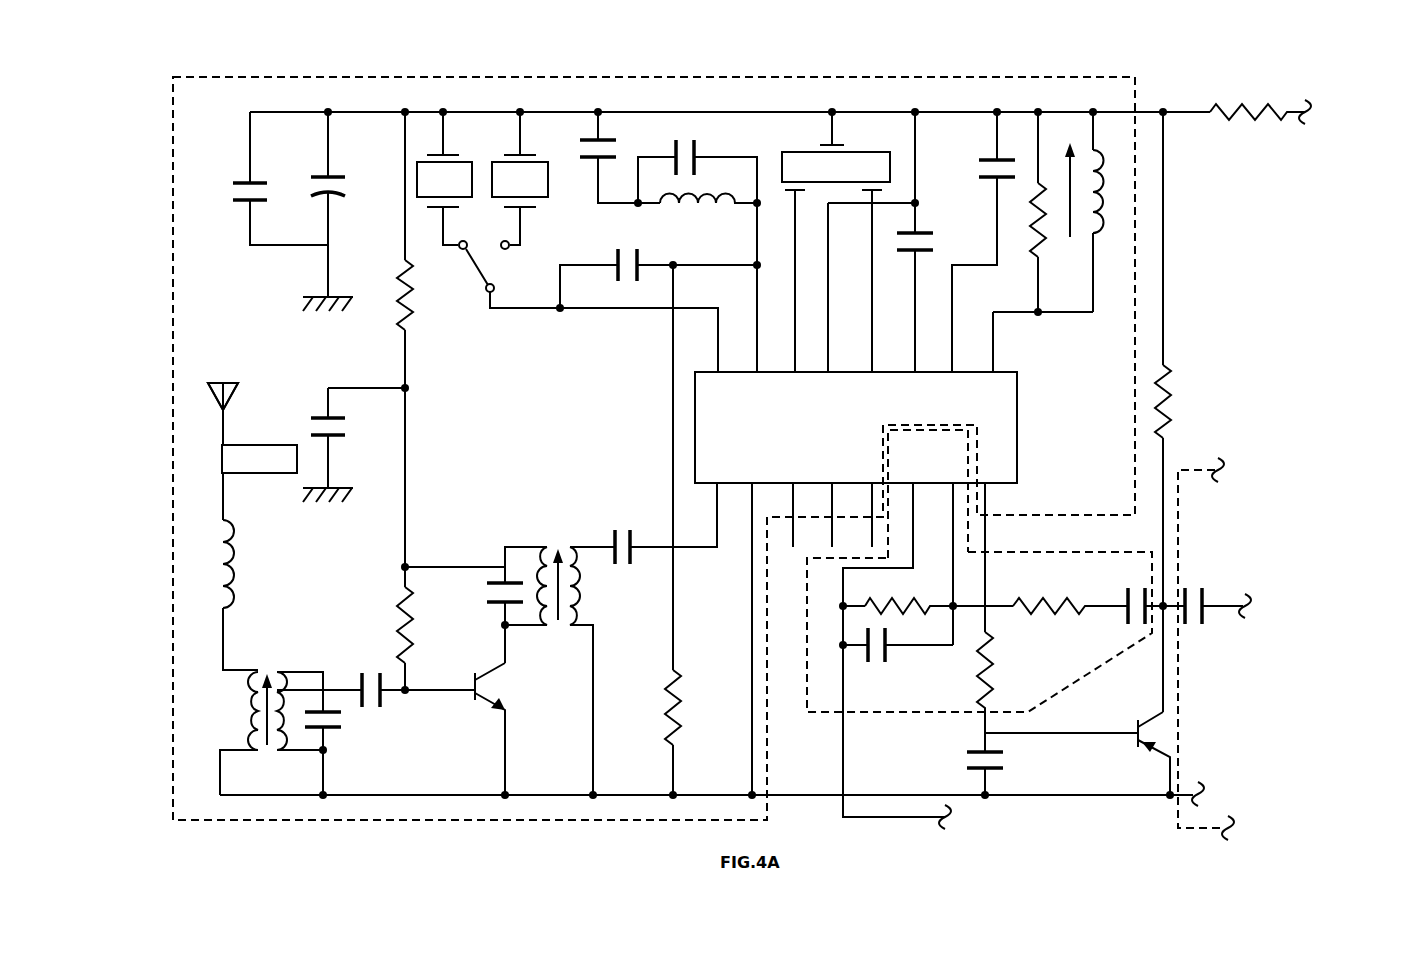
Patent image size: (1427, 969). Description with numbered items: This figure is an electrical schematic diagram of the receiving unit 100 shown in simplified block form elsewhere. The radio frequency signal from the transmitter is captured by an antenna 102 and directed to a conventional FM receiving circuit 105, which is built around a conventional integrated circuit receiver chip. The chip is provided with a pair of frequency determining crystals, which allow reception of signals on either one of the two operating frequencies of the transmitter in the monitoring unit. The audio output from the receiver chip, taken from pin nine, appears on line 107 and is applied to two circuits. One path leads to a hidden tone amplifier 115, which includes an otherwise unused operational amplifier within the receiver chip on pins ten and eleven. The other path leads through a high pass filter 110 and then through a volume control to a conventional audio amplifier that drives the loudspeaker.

The receiving unit 100 is at (163, 74).
The antenna 102 is at (223, 428).
The FM receiving circuit 105 is at (1115, 96).
The line 107 is at (985, 497).
The high pass filter 110 is at (1216, 468).
The hidden tone amplifier 115 is at (1077, 552).